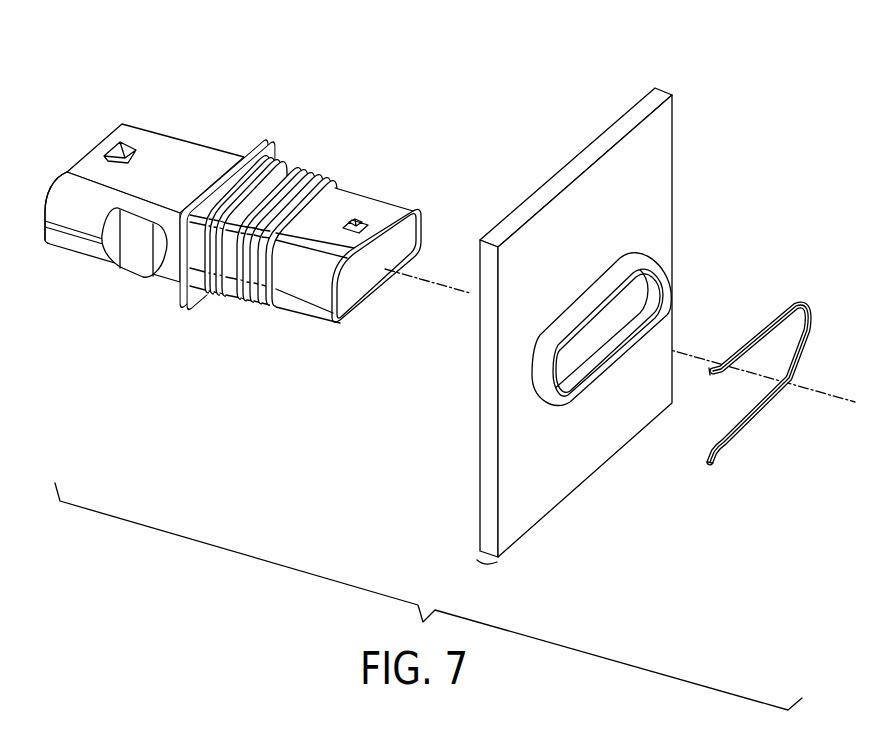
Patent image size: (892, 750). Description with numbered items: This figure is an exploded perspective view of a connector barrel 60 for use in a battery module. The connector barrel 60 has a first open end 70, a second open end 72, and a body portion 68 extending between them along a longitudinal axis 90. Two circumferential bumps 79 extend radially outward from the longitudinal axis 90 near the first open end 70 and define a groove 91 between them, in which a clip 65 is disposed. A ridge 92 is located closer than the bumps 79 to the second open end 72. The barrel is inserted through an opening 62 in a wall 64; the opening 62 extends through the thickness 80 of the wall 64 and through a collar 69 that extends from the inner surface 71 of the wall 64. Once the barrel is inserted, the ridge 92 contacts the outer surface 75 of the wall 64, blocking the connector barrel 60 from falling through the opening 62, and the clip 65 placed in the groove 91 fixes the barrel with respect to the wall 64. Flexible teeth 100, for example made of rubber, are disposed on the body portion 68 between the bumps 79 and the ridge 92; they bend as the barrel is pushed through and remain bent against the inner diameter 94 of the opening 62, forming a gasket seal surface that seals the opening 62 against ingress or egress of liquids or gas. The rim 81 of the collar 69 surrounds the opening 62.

The connector barrel 60 is at (258, 177).
The opening 62 is at (622, 314).
The wall 64 is at (569, 323).
The clip 65 is at (768, 305).
The body portion 68 is at (156, 142).
The collar 69 is at (623, 263).
The first open end 70 is at (432, 202).
The inner surface 71 is at (552, 500).
The second open end 72 is at (86, 137).
The outer surface 75 is at (481, 472).
The circumferential bumps 79 is at (320, 176).
The thickness 80 is at (484, 567).
The opening rim 81 is at (665, 291).
The longitudinal axis 90 is at (437, 285).
The groove 91 is at (338, 165).
The ridge 92 is at (259, 155).
The inner diameter 94 is at (648, 294).
The flexible teeth 100 is at (303, 150).